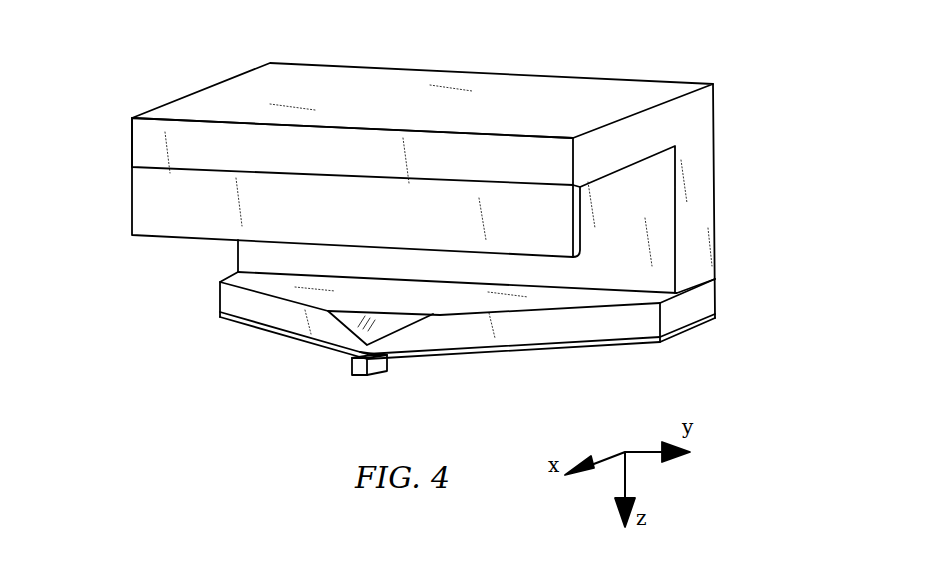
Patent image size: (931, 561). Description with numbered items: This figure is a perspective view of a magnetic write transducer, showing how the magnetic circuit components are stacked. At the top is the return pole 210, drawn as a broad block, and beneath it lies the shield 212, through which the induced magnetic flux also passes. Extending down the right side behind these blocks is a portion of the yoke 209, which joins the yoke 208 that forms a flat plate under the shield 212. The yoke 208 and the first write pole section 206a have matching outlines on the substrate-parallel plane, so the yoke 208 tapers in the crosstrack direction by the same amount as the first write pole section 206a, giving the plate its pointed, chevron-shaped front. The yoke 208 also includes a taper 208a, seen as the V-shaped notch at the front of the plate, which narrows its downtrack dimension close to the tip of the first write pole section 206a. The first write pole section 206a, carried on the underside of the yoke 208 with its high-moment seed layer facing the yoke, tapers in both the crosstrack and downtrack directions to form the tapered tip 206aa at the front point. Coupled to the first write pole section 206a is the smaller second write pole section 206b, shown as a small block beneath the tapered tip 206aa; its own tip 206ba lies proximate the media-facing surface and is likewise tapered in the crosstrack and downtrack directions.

The return pole 210 is at (237, 87).
The shield 212 is at (140, 209).
The yoke 209 is at (703, 187).
The yoke 208 is at (712, 305).
The taper 208a is at (365, 330).
The first write pole section 206a is at (577, 342).
The tapered tip 206aa is at (387, 358).
The second write pole section 206b is at (383, 375).
The tip 206ba is at (357, 375).